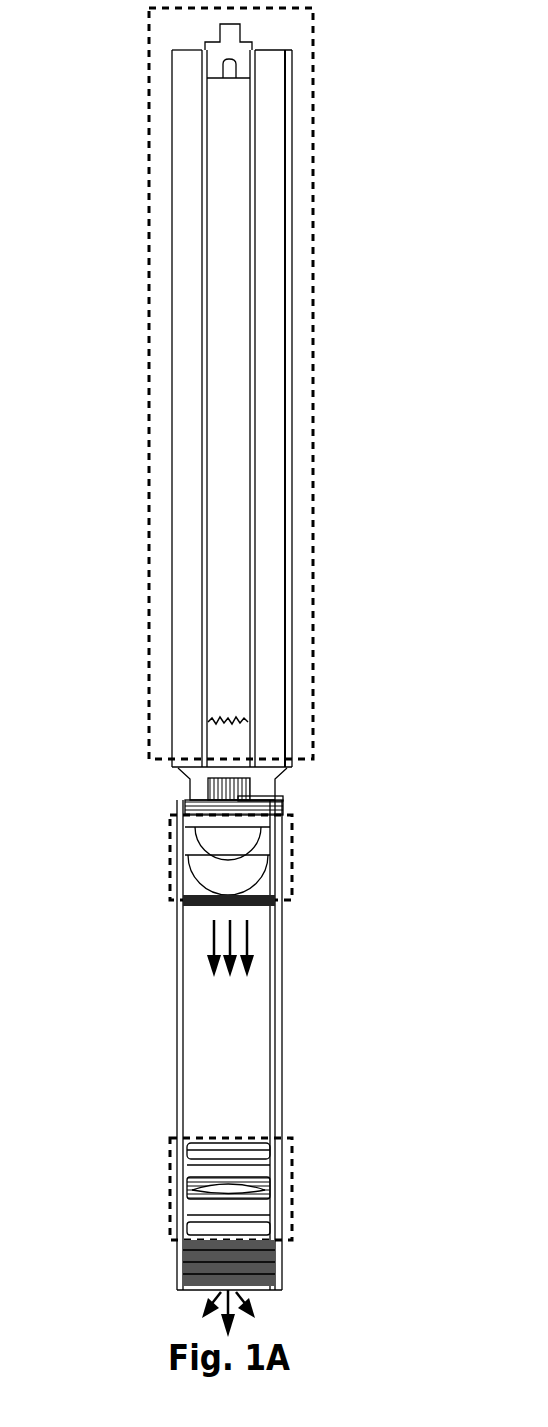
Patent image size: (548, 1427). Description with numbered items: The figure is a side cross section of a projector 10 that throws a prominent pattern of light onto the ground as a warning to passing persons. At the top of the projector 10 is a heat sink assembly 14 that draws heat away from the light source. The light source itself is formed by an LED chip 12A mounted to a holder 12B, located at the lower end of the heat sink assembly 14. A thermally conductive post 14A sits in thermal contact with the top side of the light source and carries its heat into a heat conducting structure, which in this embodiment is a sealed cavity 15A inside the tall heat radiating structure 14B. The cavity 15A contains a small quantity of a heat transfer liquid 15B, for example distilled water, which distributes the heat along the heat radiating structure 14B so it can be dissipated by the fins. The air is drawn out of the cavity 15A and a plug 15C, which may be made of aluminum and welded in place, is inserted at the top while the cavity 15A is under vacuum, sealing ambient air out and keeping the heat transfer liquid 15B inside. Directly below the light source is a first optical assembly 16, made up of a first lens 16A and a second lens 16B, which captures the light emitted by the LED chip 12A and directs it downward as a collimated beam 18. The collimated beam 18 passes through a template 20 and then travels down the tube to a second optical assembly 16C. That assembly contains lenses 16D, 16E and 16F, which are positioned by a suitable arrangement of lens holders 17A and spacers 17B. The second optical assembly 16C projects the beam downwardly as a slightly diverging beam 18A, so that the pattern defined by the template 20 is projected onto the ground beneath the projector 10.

The projector 10 is at (92, 90).
The heat sink assembly 14 is at (313, 228).
The thermally conductive post 14A is at (228, 783).
The heat radiating structure 14B is at (187, 305).
The sealed cavity 15A is at (230, 452).
The heat transfer liquid 15B is at (237, 740).
The plug 15C is at (252, 43).
The LED chip 12A is at (222, 810).
The holder 12B is at (243, 800).
The first optical assembly 16 is at (292, 862).
The first lens 16A is at (217, 830).
The second lens 16B is at (220, 877).
The second optical assembly 16C is at (292, 1150).
The lens 16D is at (200, 1150).
The lens 16E is at (193, 1185).
The lens 16F is at (200, 1230).
The lens holder 17A is at (265, 1215).
The spacer 17B is at (262, 1165).
The collimated beam 18 is at (248, 940).
The slightly diverging beam 18A is at (257, 1307).
The template 20 is at (178, 903).